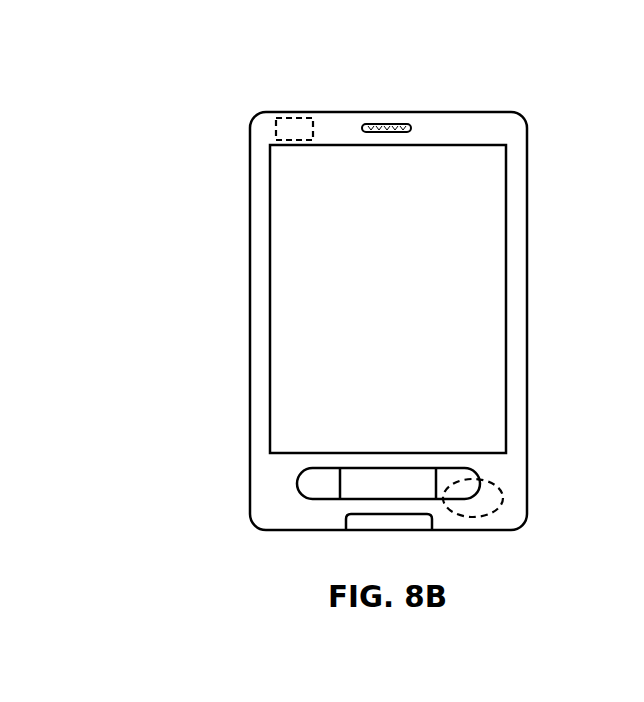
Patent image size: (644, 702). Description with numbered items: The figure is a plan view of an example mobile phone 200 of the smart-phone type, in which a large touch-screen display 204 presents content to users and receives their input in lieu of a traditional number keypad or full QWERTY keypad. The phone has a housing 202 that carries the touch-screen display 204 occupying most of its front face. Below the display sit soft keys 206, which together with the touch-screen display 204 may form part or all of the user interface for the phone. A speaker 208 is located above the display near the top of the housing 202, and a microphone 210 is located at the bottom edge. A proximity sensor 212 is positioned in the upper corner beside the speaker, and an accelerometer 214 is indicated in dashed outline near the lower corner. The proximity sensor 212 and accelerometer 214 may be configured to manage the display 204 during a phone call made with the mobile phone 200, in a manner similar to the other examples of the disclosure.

The mobile phone 200 is at (281, 92).
The housing 202 is at (440, 110).
The touch-screen display 204 is at (465, 202).
The soft keys 206 is at (297, 483).
The speaker 208 is at (382, 126).
The microphone 210 is at (346, 518).
The proximity sensor 212 is at (275, 128).
The accelerometer 214 is at (495, 510).